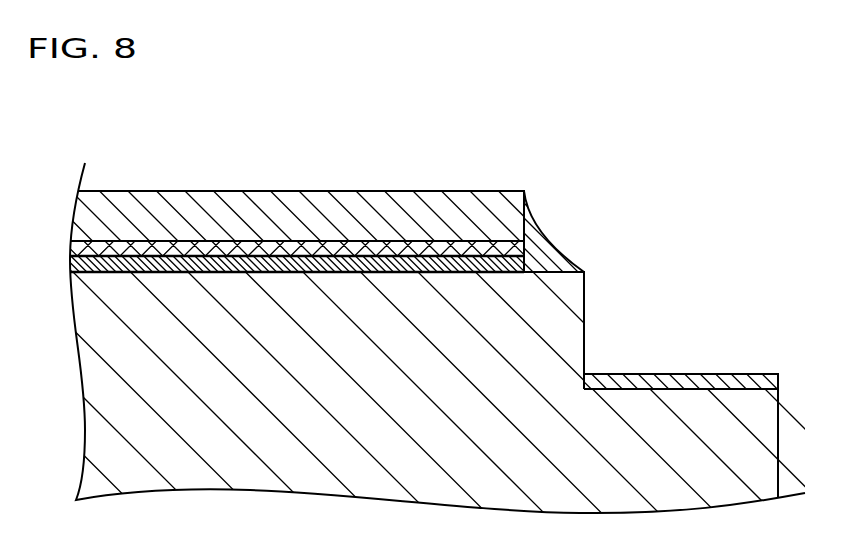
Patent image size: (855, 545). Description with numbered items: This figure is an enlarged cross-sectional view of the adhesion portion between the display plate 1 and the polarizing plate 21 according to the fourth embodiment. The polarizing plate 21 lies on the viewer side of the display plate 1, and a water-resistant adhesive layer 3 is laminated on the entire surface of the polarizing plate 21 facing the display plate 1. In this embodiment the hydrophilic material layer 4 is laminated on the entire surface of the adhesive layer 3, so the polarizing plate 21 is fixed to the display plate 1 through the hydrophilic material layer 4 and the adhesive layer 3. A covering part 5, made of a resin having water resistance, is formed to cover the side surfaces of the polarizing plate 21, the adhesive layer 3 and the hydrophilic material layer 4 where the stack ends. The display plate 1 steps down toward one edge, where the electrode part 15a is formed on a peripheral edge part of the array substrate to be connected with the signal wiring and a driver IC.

The display plate 1 is at (793, 428).
The polarizing plate 21 is at (407, 198).
The adhesive layer 3 is at (88, 248).
The hydrophilic material layer 4 is at (85, 265).
The covering part 5 is at (543, 236).
The electrode part 15a is at (667, 381).